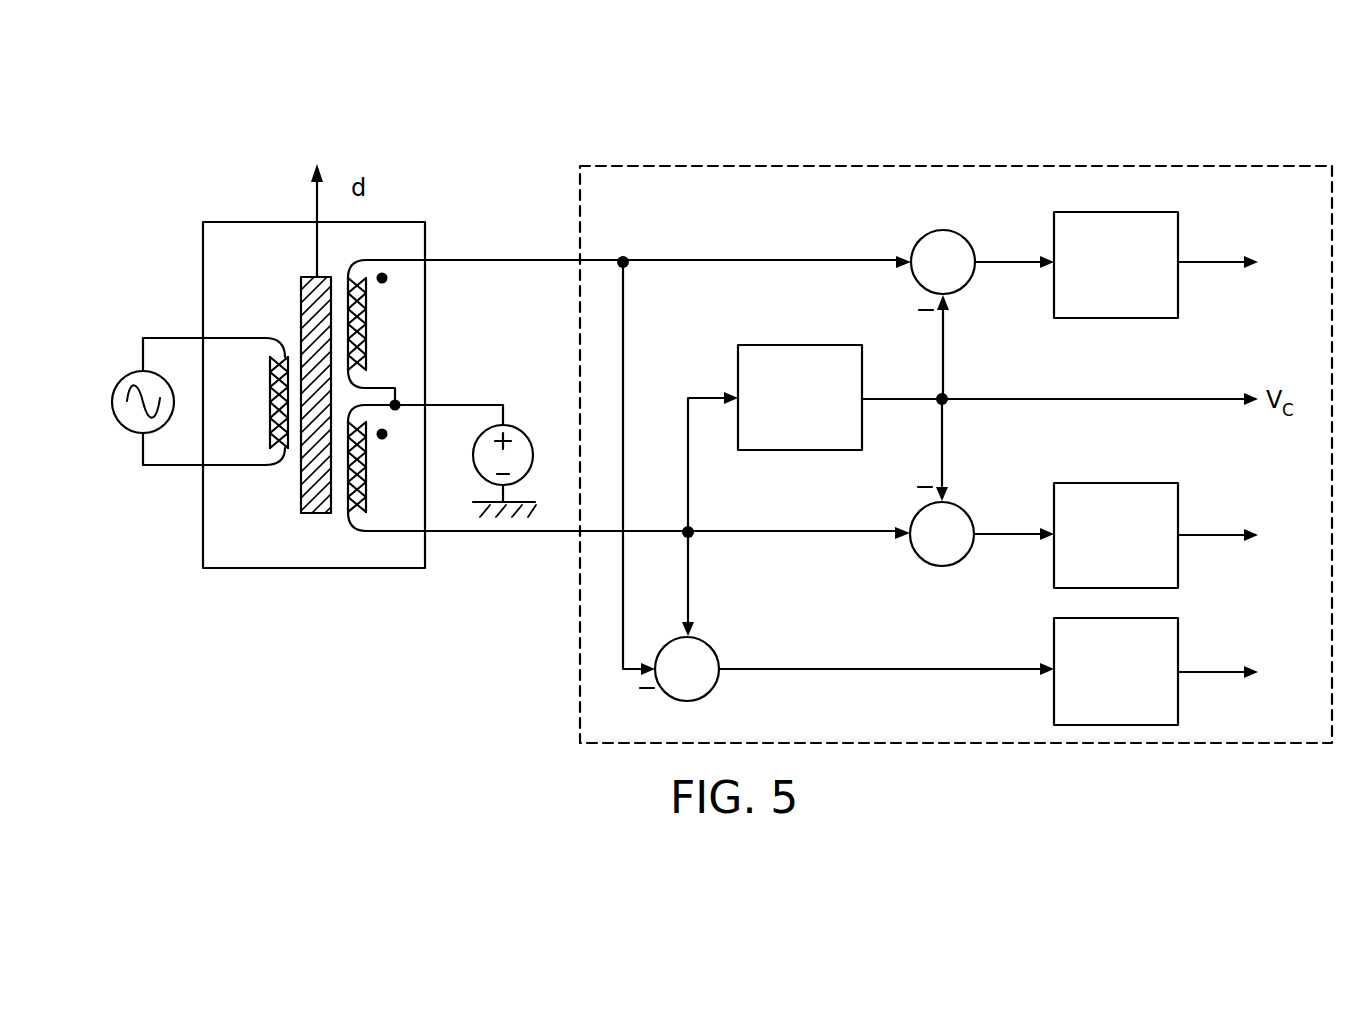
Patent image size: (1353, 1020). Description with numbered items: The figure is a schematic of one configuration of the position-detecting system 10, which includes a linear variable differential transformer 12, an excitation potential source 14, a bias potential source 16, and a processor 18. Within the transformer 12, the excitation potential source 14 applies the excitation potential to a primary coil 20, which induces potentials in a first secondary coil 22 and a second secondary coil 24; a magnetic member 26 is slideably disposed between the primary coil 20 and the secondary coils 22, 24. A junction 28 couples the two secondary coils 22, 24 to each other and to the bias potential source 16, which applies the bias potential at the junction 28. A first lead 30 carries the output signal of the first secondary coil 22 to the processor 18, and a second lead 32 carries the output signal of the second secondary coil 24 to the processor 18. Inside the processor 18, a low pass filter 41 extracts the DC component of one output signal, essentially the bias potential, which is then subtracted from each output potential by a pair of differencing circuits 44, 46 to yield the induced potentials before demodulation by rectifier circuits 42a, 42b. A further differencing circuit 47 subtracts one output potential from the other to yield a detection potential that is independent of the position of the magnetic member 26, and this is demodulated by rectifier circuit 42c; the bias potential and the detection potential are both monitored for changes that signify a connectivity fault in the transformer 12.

The system 10 is at (94, 148).
The linear variable differential transformer 12 is at (233, 222).
The excitation potential source 14 is at (121, 425).
The bias potential source 16 is at (518, 429).
The processor 18 is at (928, 166).
The primary coil 20 is at (270, 373).
The first secondary coil 22 is at (368, 320).
The second secondary coil 24 is at (352, 502).
The magnetic member 26 is at (300, 462).
The junction 28 is at (399, 402).
The first lead 30 is at (450, 258).
The second lead 32 is at (435, 533).
The low pass filter 41 is at (795, 345).
The rectifier circuit 42a is at (1178, 231).
The rectifier circuit 42b is at (1178, 503).
The rectifier circuit 42c is at (1178, 646).
The differencing circuit 44 is at (958, 292).
The differencing circuit 46 is at (923, 504).
The differencing circuit 47 is at (704, 643).